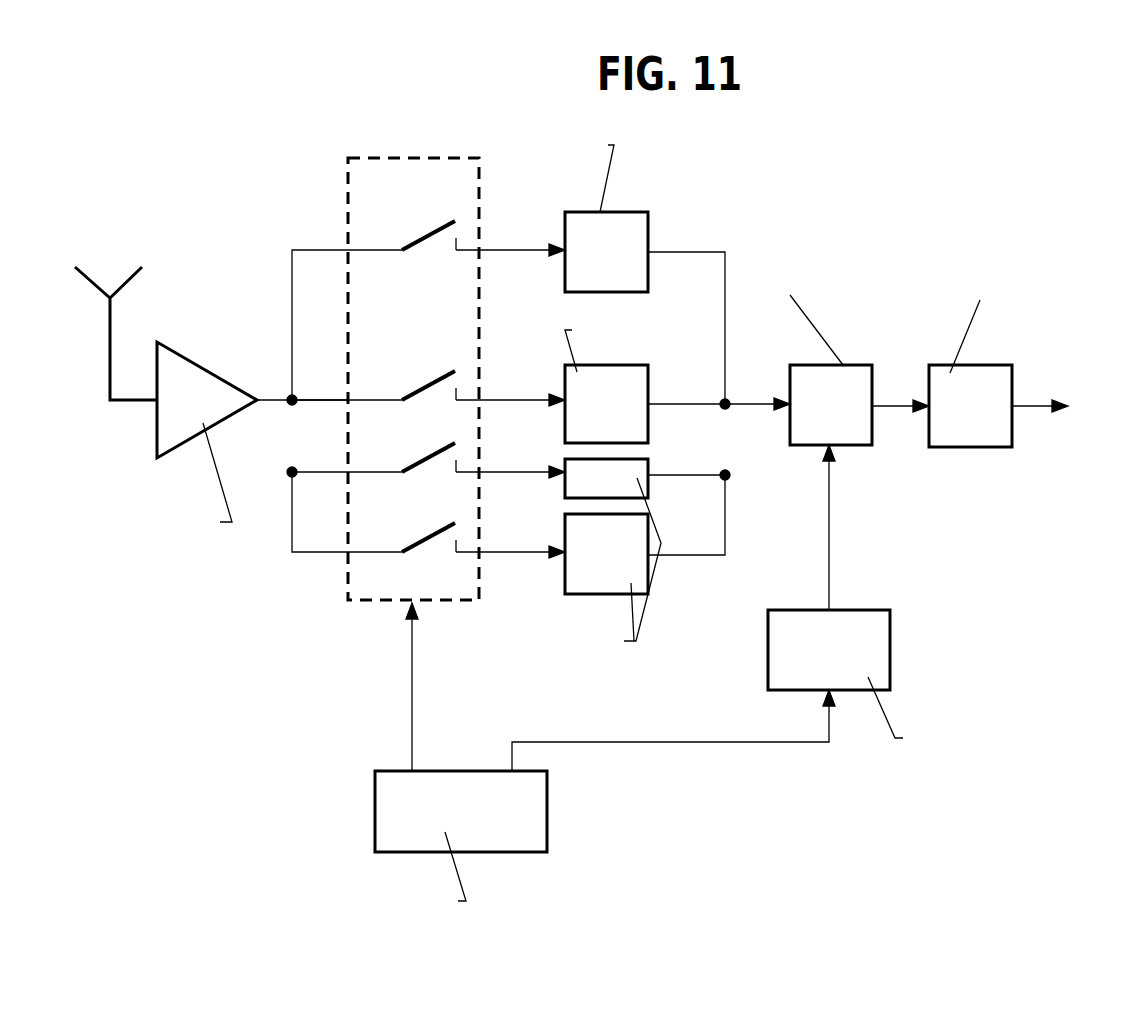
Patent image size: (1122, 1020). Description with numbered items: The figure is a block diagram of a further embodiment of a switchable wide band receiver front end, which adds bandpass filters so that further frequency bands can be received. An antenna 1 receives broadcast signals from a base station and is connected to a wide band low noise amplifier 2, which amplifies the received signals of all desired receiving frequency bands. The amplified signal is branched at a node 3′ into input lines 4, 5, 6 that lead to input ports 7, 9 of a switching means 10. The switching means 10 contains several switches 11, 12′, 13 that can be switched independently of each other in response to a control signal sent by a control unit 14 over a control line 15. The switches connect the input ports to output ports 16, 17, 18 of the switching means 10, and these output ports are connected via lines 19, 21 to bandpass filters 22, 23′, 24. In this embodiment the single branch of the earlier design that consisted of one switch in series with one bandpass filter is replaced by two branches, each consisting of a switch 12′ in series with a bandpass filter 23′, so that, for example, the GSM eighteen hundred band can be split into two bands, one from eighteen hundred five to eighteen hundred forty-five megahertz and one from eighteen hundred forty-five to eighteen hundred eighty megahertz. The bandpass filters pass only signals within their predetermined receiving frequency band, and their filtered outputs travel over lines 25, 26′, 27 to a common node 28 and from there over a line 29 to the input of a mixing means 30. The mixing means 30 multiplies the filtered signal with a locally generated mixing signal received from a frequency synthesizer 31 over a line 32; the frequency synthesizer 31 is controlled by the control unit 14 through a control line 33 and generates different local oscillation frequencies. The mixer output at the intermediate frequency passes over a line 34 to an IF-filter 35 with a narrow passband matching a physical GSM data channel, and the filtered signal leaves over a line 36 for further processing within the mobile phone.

The antenna 1 is at (88, 272).
The wide band low noise amplifier 2 is at (213, 439).
The node 3′ is at (290, 477).
The input line 4 is at (292, 317).
The input line 5 is at (322, 405).
The input line 6 is at (304, 556).
The input port 7 is at (347, 249).
The input port 9 is at (340, 548).
The switching means 10 is at (412, 156).
The switch 11 is at (428, 233).
The switch 12′ is at (428, 458).
The switch 13 is at (428, 535).
The control unit 14 is at (408, 845).
The control line 15 is at (412, 690).
The output port 16 is at (480, 253).
The output port 17 is at (480, 403).
The output port 18 is at (480, 553).
The line 19 is at (520, 247).
The line 21 is at (515, 550).
The bandpass filter 22 is at (580, 206).
The bandpass filter 23′ is at (606, 478).
The bandpass filter 24 is at (595, 571).
The line 25 is at (672, 250).
The line 26′ is at (668, 474).
The line 27 is at (670, 552).
The common node 28 is at (735, 410).
The line 29 is at (742, 402).
The mixing means 30 is at (822, 350).
The frequency synthesizer 31 is at (931, 696).
The line 32 is at (829, 540).
The control line 33 is at (670, 740).
The line 34 is at (885, 404).
The IF-filter 35 is at (989, 340).
The line 36 is at (1027, 404).